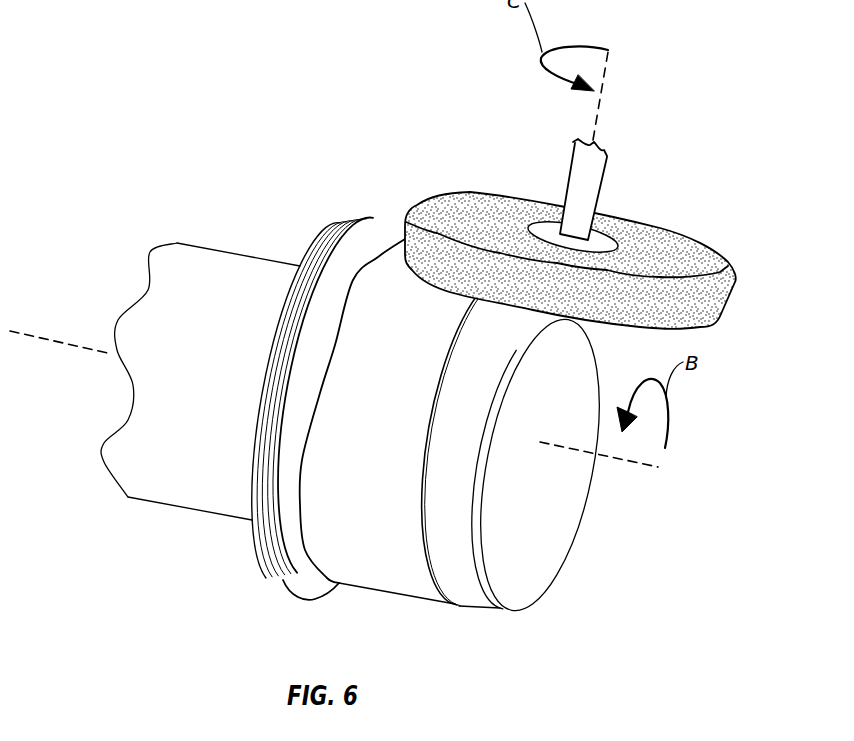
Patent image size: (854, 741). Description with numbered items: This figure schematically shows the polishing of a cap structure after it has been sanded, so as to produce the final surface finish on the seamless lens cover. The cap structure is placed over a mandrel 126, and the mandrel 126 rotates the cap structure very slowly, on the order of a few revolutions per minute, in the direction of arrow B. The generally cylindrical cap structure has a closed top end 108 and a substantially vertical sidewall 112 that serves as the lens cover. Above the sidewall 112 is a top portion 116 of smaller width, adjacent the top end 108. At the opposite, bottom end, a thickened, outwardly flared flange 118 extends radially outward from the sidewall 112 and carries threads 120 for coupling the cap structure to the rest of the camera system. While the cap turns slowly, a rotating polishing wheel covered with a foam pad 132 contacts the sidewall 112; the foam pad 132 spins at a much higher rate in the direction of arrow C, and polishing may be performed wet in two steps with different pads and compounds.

The top end 108 is at (573, 388).
The sidewall 112 is at (383, 583).
The top portion 116 is at (472, 598).
The flange 118 is at (373, 234).
The threads 120 is at (340, 223).
The mandrel 126 is at (238, 270).
The foam pad 132 is at (660, 250).